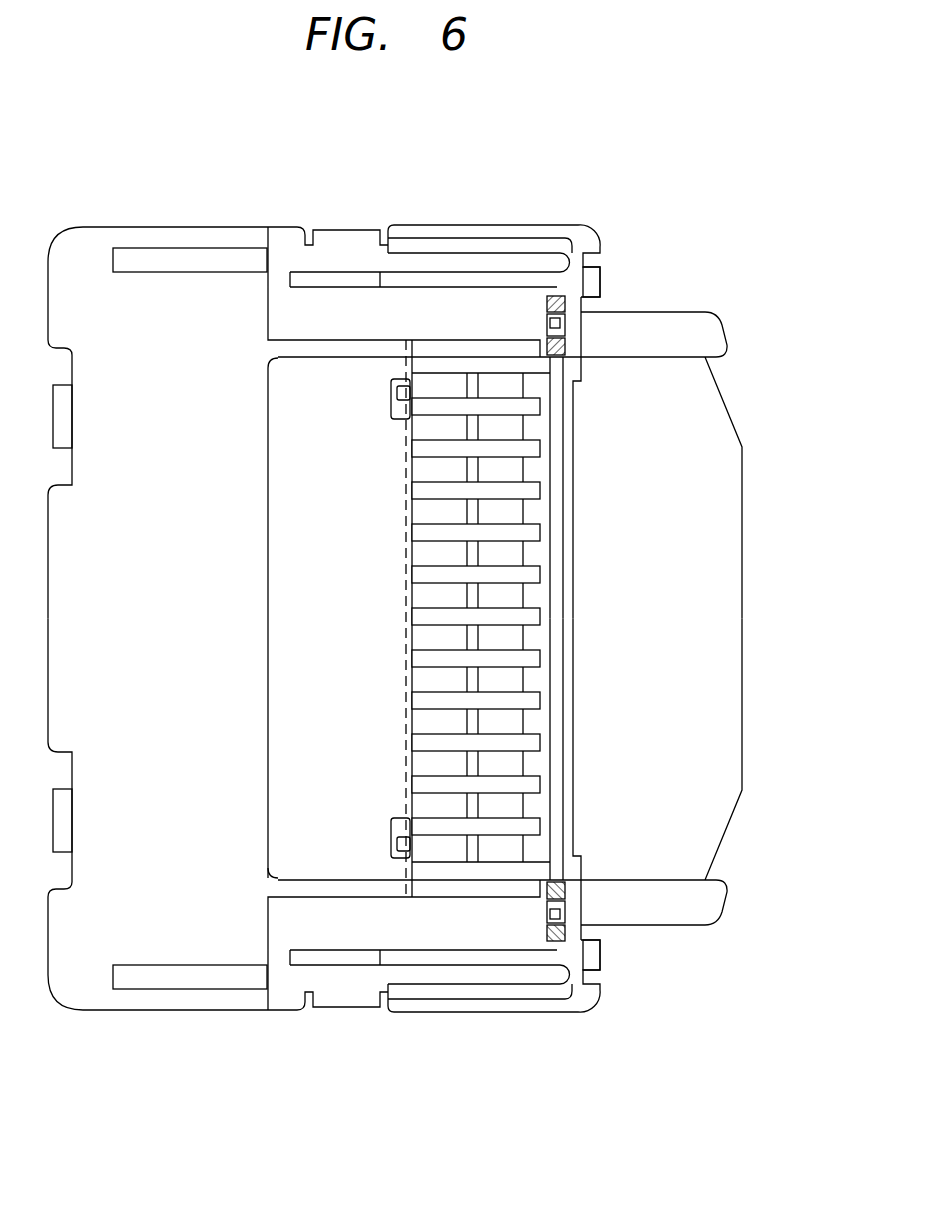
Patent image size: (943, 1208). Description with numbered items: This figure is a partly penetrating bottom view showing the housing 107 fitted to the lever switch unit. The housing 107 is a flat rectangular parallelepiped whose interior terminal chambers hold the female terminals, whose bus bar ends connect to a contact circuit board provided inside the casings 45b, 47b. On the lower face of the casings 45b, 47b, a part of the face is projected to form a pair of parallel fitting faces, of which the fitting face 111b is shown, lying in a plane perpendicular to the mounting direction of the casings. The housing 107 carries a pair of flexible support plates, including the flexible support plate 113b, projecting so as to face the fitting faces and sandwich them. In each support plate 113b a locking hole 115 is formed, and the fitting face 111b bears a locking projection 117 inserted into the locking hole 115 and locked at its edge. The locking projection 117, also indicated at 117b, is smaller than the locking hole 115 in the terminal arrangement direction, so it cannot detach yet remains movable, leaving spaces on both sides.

The casing 45b is at (314, 564).
The casing 47b is at (184, 228).
The housing 107 is at (268, 643).
The fitting face 111b is at (556, 268).
The flexible support plate 113b is at (567, 298).
The locking hole 115 is at (580, 322).
The locking projection 117 is at (400, 390).
The seal member 117b is at (567, 348).